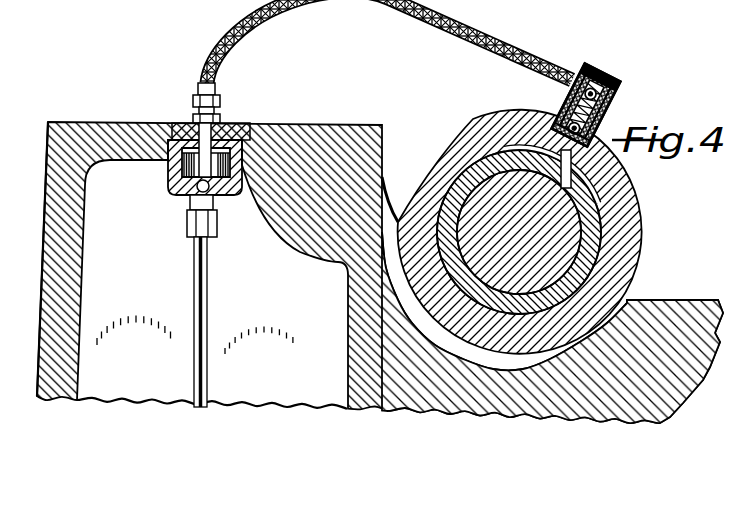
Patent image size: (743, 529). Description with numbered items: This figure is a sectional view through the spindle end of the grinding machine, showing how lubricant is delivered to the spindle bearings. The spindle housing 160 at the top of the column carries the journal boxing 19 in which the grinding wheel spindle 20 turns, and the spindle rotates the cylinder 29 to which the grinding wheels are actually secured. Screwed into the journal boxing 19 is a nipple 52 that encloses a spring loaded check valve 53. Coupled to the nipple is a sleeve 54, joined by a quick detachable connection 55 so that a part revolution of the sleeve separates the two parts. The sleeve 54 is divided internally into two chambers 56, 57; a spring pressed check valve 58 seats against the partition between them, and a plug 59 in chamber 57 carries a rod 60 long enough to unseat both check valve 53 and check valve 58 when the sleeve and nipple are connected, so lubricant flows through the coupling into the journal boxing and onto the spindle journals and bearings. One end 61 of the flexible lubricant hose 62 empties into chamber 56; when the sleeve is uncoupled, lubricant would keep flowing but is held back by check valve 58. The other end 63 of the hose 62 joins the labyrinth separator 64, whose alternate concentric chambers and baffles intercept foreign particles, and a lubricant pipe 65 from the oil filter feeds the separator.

The spindle housing 160 is at (57, 176).
The journal boxing 19 is at (640, 237).
The cylinder 29 is at (593, 254).
The grinding wheel spindle 20 is at (560, 271).
The nipple 52 is at (600, 120).
The spring loaded check valve 53 is at (622, 98).
The sleeve 54 is at (623, 83).
The quick detachable connection 55 is at (558, 110).
The chamber 56 is at (598, 68).
The chamber 57 is at (562, 97).
The spring pressed check valve 58 is at (592, 82).
The plug 59 is at (565, 84).
The rod 60 is at (578, 84).
The end of hose 61 is at (585, 84).
The flexible lubricant hose 62 is at (466, 35).
The other end of hose 63 is at (216, 89).
The labyrinth separator 64 is at (222, 197).
The lubricant pipe 65 is at (207, 288).